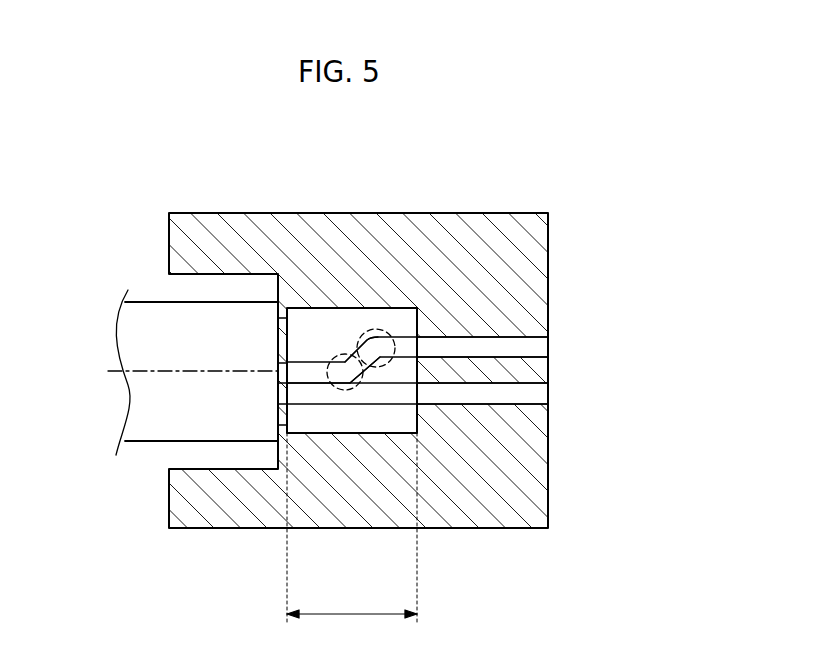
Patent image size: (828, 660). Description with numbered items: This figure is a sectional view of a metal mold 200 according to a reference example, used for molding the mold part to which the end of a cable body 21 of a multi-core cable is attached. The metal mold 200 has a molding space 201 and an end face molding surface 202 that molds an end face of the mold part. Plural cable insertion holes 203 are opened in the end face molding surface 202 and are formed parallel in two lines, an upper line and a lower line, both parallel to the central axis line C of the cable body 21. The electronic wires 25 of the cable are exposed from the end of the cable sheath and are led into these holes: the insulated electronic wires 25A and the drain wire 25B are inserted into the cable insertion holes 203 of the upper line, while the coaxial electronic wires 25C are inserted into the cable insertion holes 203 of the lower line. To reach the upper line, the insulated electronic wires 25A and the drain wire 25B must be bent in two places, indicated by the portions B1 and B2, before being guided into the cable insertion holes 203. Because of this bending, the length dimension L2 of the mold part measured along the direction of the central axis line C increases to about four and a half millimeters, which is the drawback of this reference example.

The cable body 21 is at (160, 441).
The electronic wire 25 is at (434, 270).
The insulated electronic wire 25A is at (417, 349).
The drain wire 25B is at (443, 347).
The coaxial electronic wire 25C is at (467, 393).
The metal mold 200 is at (465, 529).
The molding space 201 is at (400, 420).
The end face molding surface 202 is at (370, 333).
The cable insertion hole 203 is at (497, 347).
The bent portion B1 is at (338, 357).
The bent portion B2 is at (363, 330).
The central axis line C is at (183, 372).
The length dimension L2 is at (352, 528).